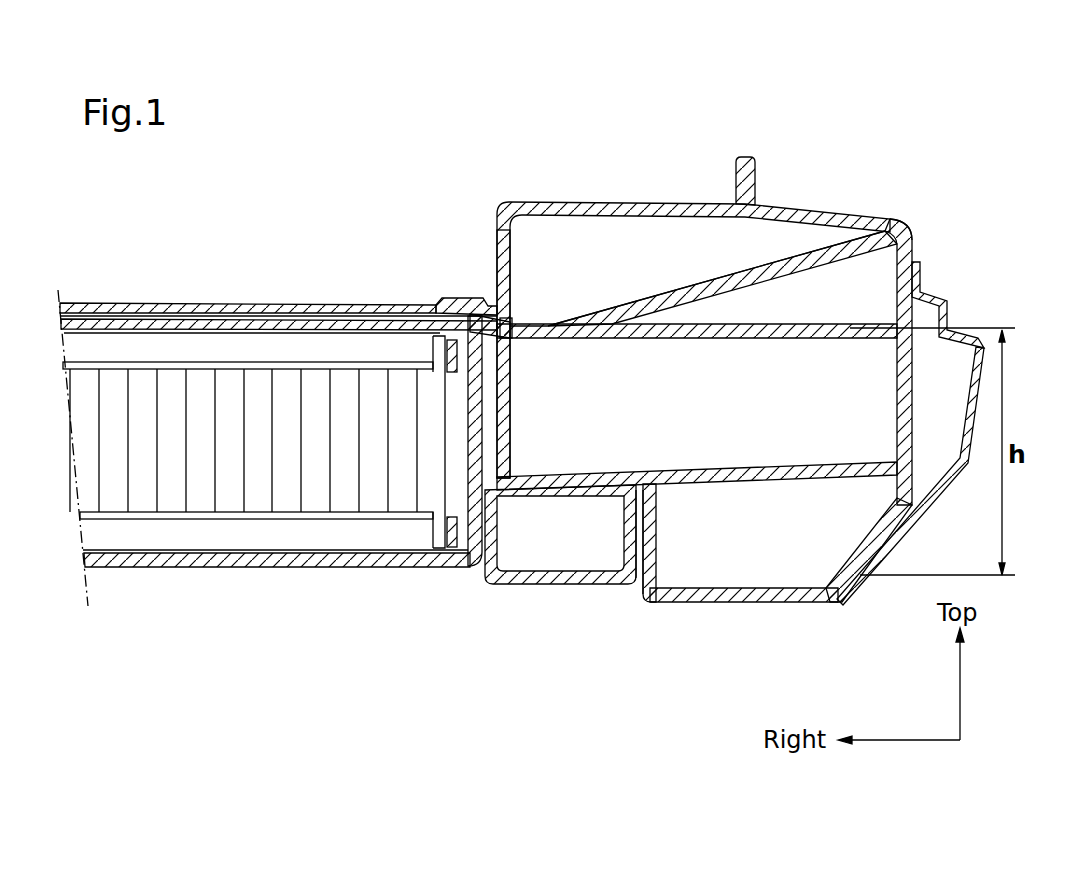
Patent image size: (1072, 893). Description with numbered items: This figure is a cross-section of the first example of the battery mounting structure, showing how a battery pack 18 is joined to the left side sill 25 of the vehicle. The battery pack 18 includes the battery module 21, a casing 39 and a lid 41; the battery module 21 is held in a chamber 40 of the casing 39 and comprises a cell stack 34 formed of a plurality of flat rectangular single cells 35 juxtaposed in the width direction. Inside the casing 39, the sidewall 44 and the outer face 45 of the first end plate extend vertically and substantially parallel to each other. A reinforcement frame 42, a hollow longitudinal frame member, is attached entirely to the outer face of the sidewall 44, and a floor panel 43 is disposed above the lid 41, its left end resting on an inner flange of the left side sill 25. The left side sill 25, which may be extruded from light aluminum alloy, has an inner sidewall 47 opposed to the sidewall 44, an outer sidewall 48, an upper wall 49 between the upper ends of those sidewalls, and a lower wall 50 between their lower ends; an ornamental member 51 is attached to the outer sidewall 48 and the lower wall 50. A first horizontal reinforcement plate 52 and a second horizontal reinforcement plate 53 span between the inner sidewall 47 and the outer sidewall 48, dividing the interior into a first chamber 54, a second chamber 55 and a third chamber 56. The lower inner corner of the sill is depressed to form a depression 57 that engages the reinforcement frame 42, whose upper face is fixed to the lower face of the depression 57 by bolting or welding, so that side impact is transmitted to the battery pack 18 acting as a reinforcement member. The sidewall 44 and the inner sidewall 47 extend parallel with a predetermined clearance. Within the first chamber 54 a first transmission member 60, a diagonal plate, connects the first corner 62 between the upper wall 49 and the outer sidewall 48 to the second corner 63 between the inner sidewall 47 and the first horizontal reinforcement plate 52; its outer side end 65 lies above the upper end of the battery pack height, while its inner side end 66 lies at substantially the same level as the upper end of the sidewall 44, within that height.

The battery pack 18 is at (265, 600).
The battery module 21 is at (469, 560).
The left side sill 25 is at (826, 177).
The cell stack 34 is at (210, 532).
The single cells 35 is at (140, 502).
The casing 39 is at (332, 568).
The chamber 40 is at (462, 380).
The lid 41 is at (98, 304).
The reinforcement frame 42 is at (558, 588).
The floor panel 43 is at (216, 303).
The sidewall 44 is at (470, 420).
The outer face 45 is at (440, 404).
The inner sidewall 47 is at (499, 230).
The outer sidewall 48 is at (906, 393).
The upper wall 49 is at (692, 202).
The lower wall 50 is at (653, 602).
The ornamental member 51 is at (850, 588).
The first horizontal reinforcement plate 52 is at (742, 340).
The second horizontal reinforcement plate 53 is at (770, 464).
The first chamber 54 is at (598, 232).
The second chamber 55 is at (880, 358).
The third chamber 56 is at (742, 560).
The depression 57 is at (638, 596).
The first transmission member 60 is at (789, 274).
The first corner 62 is at (894, 222).
The second corner 63 is at (524, 323).
The outer side end 65 is at (912, 230).
The inner side end 66 is at (513, 322).